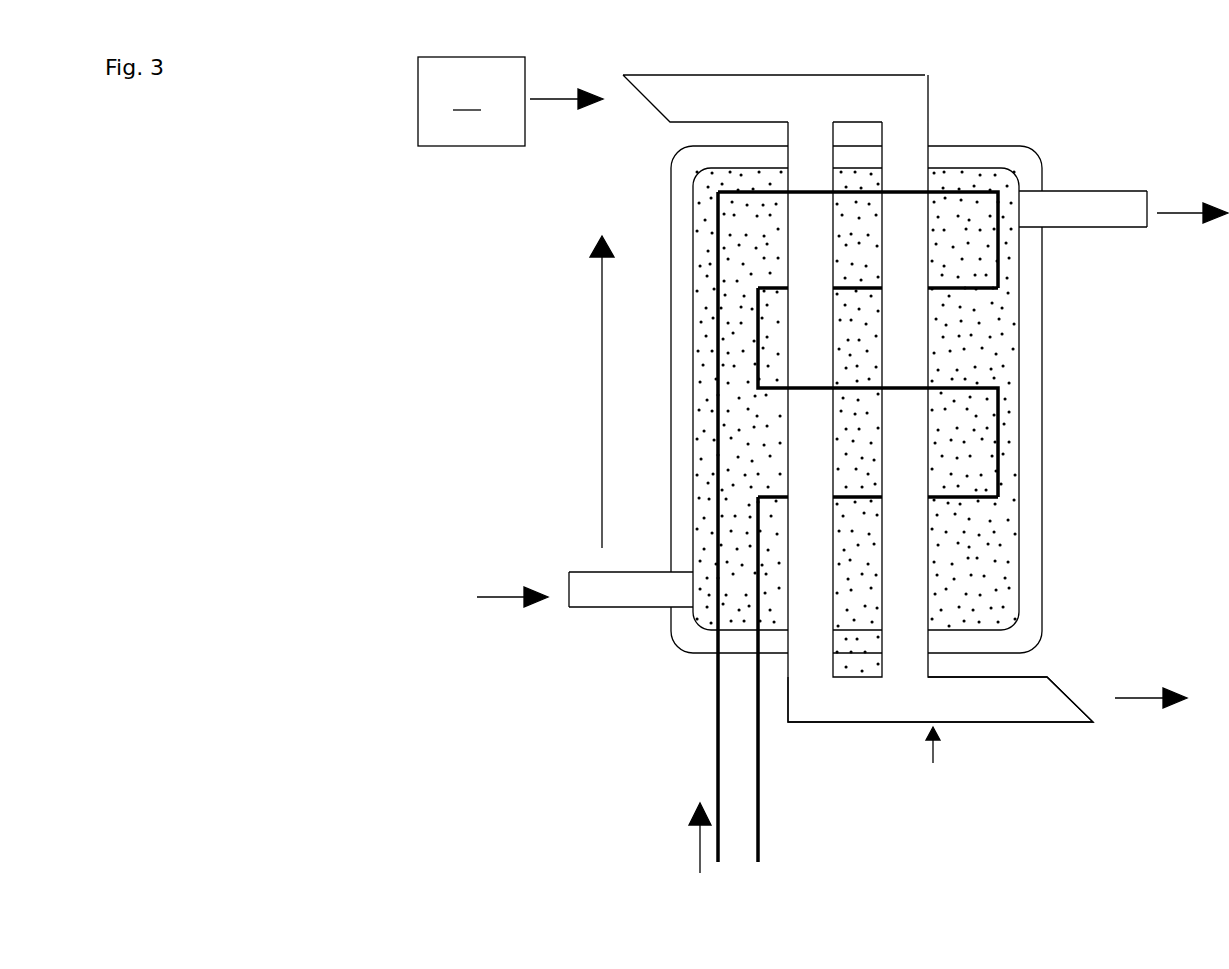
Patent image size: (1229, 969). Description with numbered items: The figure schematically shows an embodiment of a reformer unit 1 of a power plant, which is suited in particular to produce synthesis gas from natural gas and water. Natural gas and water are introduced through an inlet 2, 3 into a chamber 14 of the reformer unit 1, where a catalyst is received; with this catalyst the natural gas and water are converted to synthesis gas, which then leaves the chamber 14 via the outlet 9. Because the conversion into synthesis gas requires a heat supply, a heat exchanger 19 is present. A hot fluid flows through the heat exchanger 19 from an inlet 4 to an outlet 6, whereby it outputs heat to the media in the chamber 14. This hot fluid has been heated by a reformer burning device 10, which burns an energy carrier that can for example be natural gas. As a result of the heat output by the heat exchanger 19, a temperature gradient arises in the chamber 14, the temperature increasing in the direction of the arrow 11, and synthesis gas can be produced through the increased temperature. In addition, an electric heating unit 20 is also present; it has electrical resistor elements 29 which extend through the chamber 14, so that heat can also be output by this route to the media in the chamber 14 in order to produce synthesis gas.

The reformer unit 1 is at (1124, 120).
The inlet 2 is at (568, 605).
The inlet 3 is at (568, 585).
The inlet 4 is at (643, 97).
The outlet 6 is at (1070, 698).
The outlet 9 is at (1098, 228).
The reformer burning device 10 is at (510, 101).
The arrow 11 is at (602, 380).
The chamber 14 is at (1002, 355).
The heat exchanger 19 is at (933, 761).
The electric heating unit 20 is at (763, 808).
The electrical resistor elements 29 is at (717, 752).